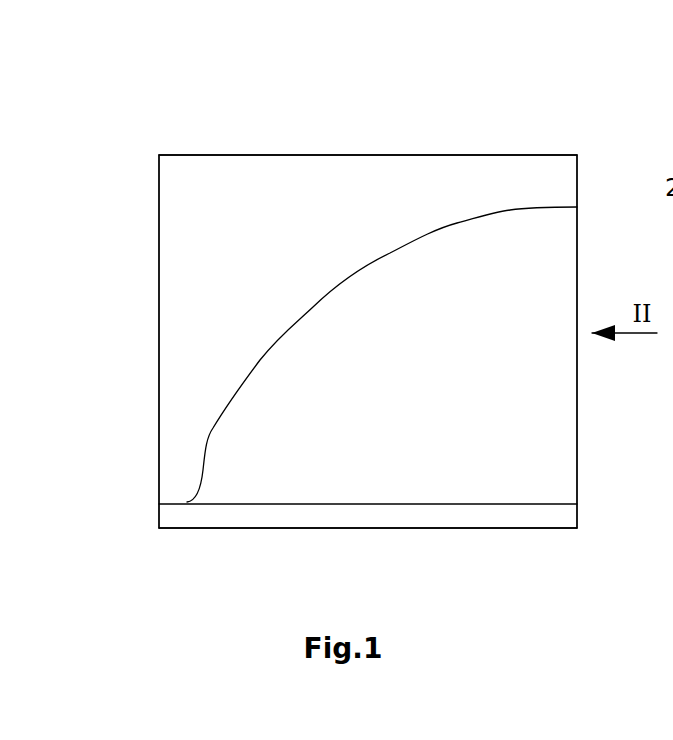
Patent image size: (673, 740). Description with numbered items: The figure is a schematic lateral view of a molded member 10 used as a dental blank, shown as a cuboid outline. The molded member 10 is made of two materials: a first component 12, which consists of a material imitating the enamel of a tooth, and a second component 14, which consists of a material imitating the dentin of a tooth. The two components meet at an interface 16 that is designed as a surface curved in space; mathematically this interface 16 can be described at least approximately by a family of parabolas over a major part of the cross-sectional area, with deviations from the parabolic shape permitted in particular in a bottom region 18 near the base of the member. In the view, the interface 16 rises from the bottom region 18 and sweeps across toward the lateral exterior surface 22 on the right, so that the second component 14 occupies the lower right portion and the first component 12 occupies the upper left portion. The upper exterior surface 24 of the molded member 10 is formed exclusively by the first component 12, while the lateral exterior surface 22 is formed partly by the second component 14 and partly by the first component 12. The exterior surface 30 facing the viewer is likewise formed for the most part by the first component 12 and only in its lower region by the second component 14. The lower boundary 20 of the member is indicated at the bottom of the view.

The molded member 10 is at (133, 255).
The first component 12 is at (196, 287).
The second component 14 is at (501, 420).
The interface 16 is at (492, 307).
The bottom region 18 is at (136, 463).
The bottom surface 20 is at (318, 535).
The lateral exterior surface 22 is at (588, 183).
The upper exterior surface 24 is at (335, 140).
The exterior surface 30 is at (147, 351).